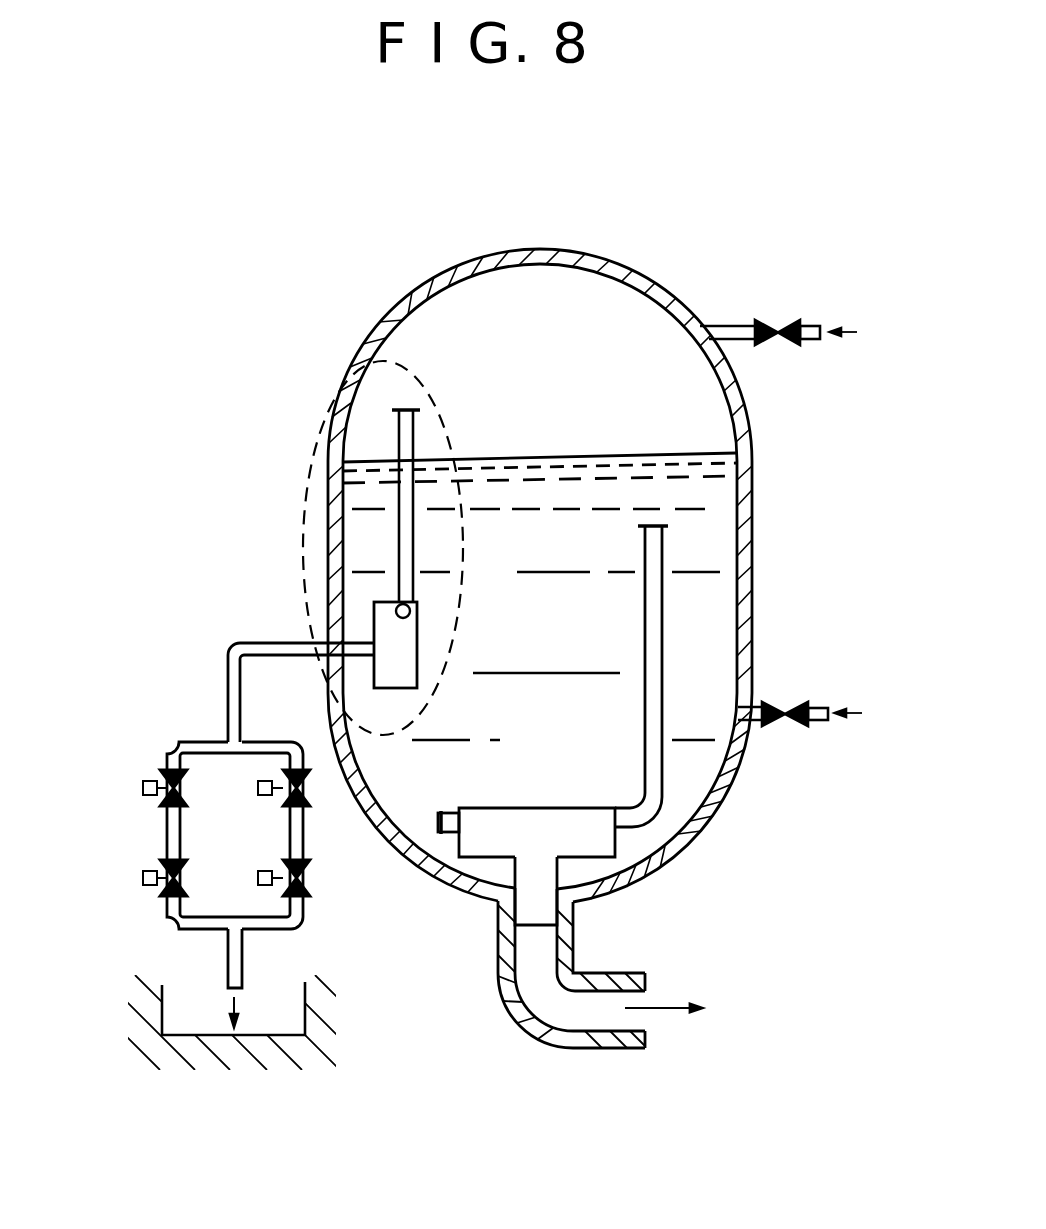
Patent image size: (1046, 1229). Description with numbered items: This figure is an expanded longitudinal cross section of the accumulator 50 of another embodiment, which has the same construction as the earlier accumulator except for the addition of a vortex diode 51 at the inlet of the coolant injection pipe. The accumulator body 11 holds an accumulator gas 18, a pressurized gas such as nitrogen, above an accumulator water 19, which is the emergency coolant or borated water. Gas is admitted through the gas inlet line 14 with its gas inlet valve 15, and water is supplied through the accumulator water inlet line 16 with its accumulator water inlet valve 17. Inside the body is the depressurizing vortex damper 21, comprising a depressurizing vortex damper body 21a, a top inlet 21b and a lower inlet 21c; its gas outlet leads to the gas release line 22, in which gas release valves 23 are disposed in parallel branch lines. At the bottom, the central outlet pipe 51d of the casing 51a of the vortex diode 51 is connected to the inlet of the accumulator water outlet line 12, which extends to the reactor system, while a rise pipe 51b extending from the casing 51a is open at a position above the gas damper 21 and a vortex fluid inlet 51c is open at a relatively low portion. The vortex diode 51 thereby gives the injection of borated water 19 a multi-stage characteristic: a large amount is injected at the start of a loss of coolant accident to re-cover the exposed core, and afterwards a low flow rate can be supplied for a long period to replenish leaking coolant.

The accumulator body 11 is at (517, 250).
The accumulator water outlet line 12 is at (505, 996).
The gas inlet line 14 is at (722, 324).
The gas inlet valve 15 is at (788, 320).
The accumulator water inlet line 16 is at (756, 705).
The accumulator water inlet valve 17 is at (797, 703).
The accumulator gas 18 is at (636, 325).
The accumulator water 19 is at (572, 480).
The depressurizing vortex damper 21 is at (316, 475).
The depressurizing vortex damper body 21a is at (412, 650).
The top inlet 21b is at (412, 418).
The lower inlet 21c is at (411, 610).
The gas release line 22 is at (248, 640).
The gas release valves 23 is at (150, 870).
The accumulator 50 is at (391, 299).
The vortex diode 51 is at (613, 732).
The casing 51a is at (605, 847).
The rise pipe 51b is at (665, 592).
The vortex fluid inlet 51c is at (452, 808).
The central outlet pipe 51d is at (525, 876).